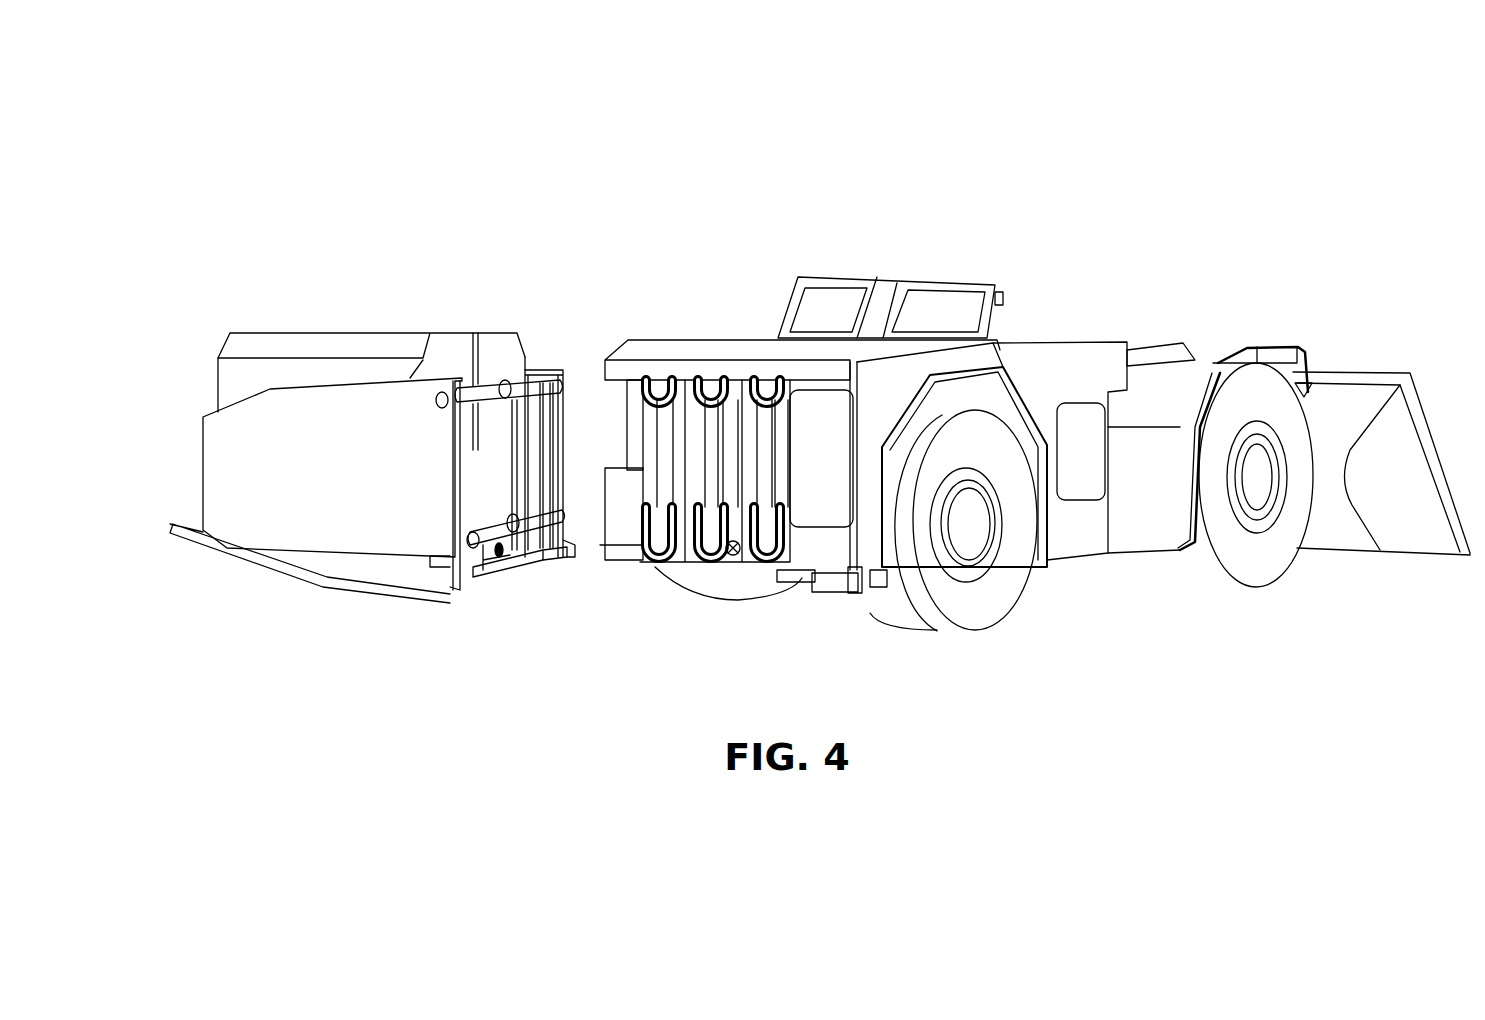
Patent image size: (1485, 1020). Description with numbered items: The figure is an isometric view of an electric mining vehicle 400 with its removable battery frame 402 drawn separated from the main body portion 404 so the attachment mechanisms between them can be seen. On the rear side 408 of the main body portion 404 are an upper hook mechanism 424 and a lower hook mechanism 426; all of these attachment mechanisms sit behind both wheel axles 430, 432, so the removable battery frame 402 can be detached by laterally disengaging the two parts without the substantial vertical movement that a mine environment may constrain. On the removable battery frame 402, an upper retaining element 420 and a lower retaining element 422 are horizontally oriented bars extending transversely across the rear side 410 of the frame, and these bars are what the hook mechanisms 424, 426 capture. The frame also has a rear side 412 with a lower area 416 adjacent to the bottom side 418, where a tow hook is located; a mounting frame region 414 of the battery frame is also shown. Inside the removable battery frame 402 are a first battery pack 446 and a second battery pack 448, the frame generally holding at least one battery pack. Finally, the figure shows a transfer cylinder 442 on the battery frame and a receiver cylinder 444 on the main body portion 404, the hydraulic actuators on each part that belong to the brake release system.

The electric mining vehicle 400 is at (628, 130).
The removable battery frame 402 is at (348, 270).
The main body portion 404 is at (1070, 270).
The rear side of main body portion 408 is at (798, 632).
The rear side of removable battery frame 410 is at (528, 597).
The rear side 412 is at (190, 466).
The mounting frame 414 is at (578, 338).
The lower area 416 is at (573, 566).
The bottom side 418 is at (293, 616).
The upper retaining element 420 is at (490, 392).
The lower retaining element 422 is at (490, 530).
The upper hook mechanism 424 is at (666, 370).
The lower hook mechanism 426 is at (665, 546).
The wheel axle 430 is at (968, 527).
The wheel axle 432 is at (1260, 490).
The transfer cylinder 442 is at (489, 575).
The receiver cylinder 444 is at (752, 545).
The first battery pack 446 is at (262, 340).
The second battery pack 448 is at (483, 385).